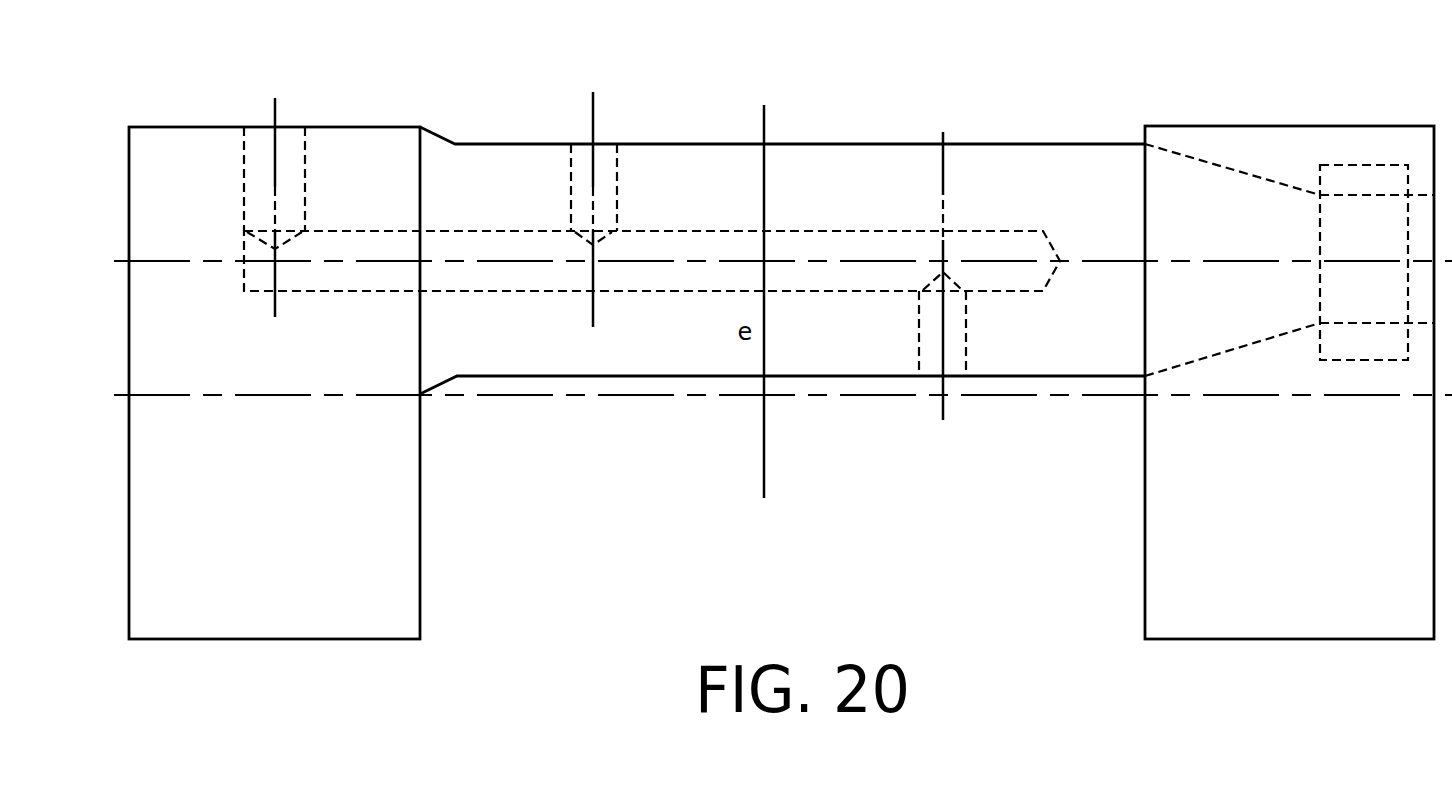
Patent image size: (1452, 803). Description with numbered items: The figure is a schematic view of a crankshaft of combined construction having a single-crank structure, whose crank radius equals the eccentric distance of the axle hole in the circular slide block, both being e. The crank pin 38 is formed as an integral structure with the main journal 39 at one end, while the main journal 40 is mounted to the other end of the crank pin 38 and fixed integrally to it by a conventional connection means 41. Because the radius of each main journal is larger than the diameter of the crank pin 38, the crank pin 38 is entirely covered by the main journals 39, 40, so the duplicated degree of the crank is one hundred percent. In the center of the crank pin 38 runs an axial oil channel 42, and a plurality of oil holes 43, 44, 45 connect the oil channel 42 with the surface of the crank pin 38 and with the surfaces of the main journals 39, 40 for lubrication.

The crank pin 38 is at (834, 173).
The main journal 39 is at (283, 617).
The main journal 40 is at (1297, 625).
The conventional connection means 41 is at (1370, 172).
The axial oil channel 42 is at (698, 247).
The oil hole 43 is at (287, 140).
The oil hole 44 is at (579, 153).
The oil hole 45 is at (930, 367).